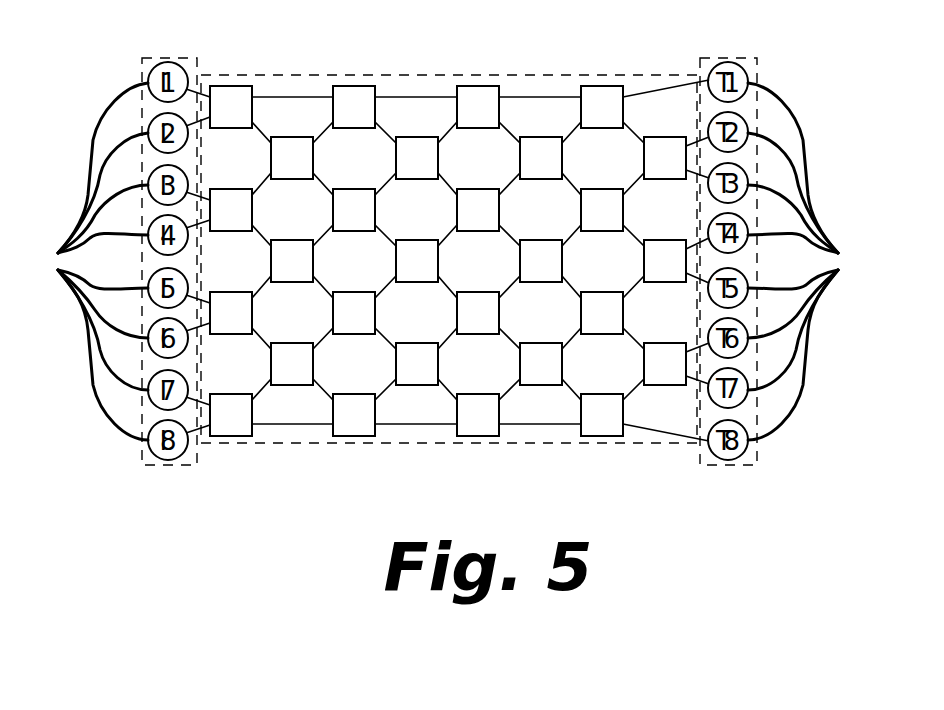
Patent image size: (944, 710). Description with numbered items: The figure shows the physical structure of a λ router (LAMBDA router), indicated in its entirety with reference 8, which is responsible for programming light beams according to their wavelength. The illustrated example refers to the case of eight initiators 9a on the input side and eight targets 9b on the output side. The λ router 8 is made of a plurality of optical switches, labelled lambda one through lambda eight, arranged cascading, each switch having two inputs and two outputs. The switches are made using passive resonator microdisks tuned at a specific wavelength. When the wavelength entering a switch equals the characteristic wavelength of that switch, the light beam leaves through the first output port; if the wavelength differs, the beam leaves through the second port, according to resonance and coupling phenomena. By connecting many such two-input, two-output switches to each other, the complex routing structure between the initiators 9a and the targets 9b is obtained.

The λ router 8 is at (401, 75).
The initiators 9a is at (87, 261).
The targets 9b is at (809, 261).